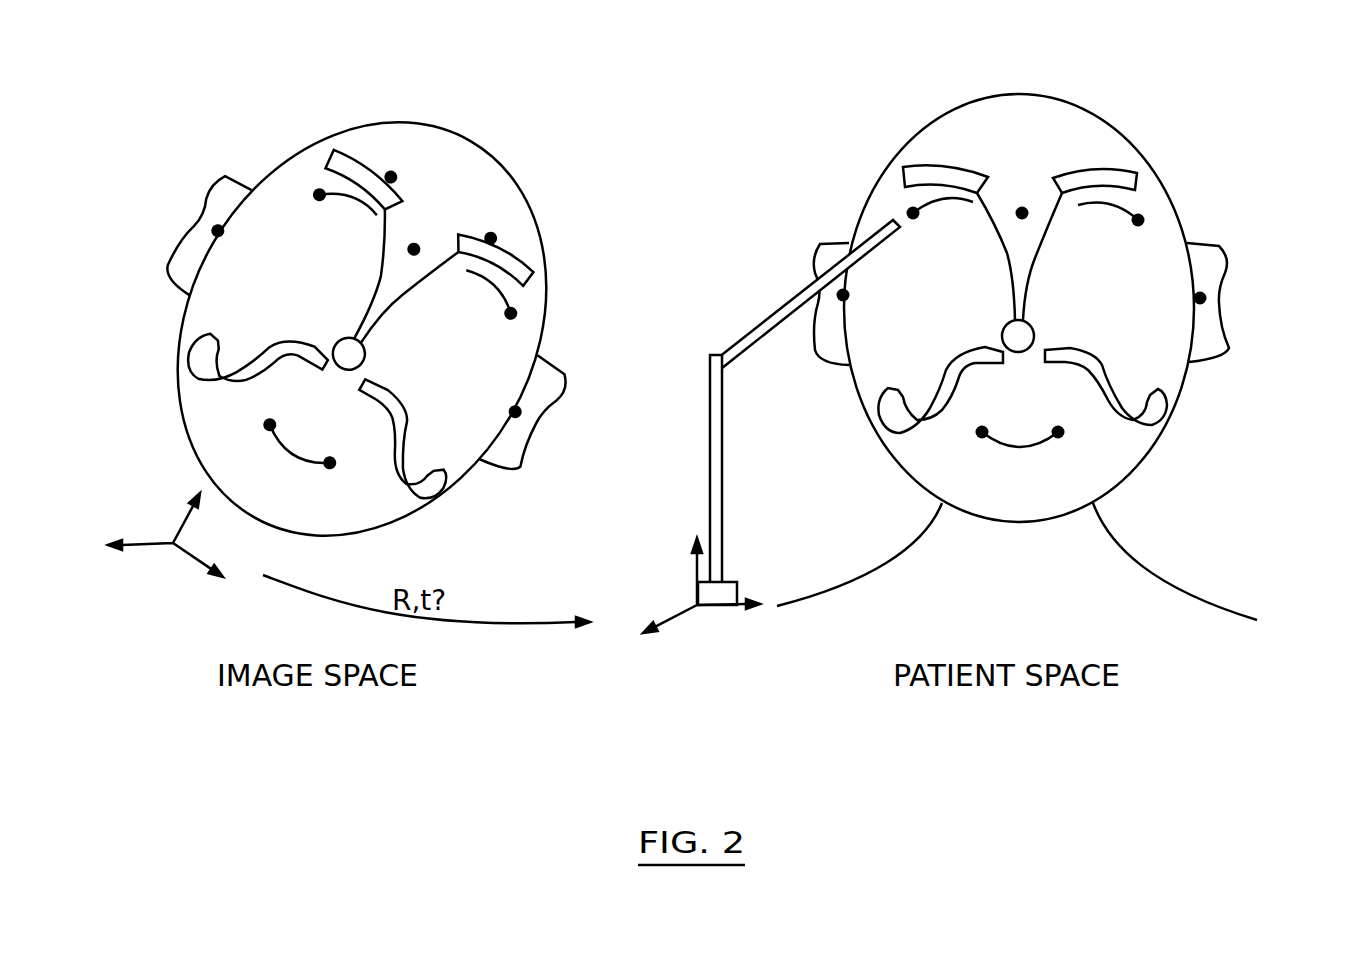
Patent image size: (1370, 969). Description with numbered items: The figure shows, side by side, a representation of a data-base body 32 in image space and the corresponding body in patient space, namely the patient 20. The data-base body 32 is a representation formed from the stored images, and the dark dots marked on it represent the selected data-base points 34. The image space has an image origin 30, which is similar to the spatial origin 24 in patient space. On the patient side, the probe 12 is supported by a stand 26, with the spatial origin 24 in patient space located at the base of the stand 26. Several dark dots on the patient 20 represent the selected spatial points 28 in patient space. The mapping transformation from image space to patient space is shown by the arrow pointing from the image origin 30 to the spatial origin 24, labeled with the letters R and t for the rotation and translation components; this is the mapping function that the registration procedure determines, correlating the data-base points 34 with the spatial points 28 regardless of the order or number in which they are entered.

The probe 12 is at (880, 208).
The patient 20 is at (1222, 122).
The spatial origin 24 is at (706, 644).
The stand 26 is at (687, 420).
The selected spatial points 28 is at (1221, 294).
The image origin 30 is at (152, 578).
The data-base body 32 is at (200, 118).
The selected data-base points 34 is at (488, 212).